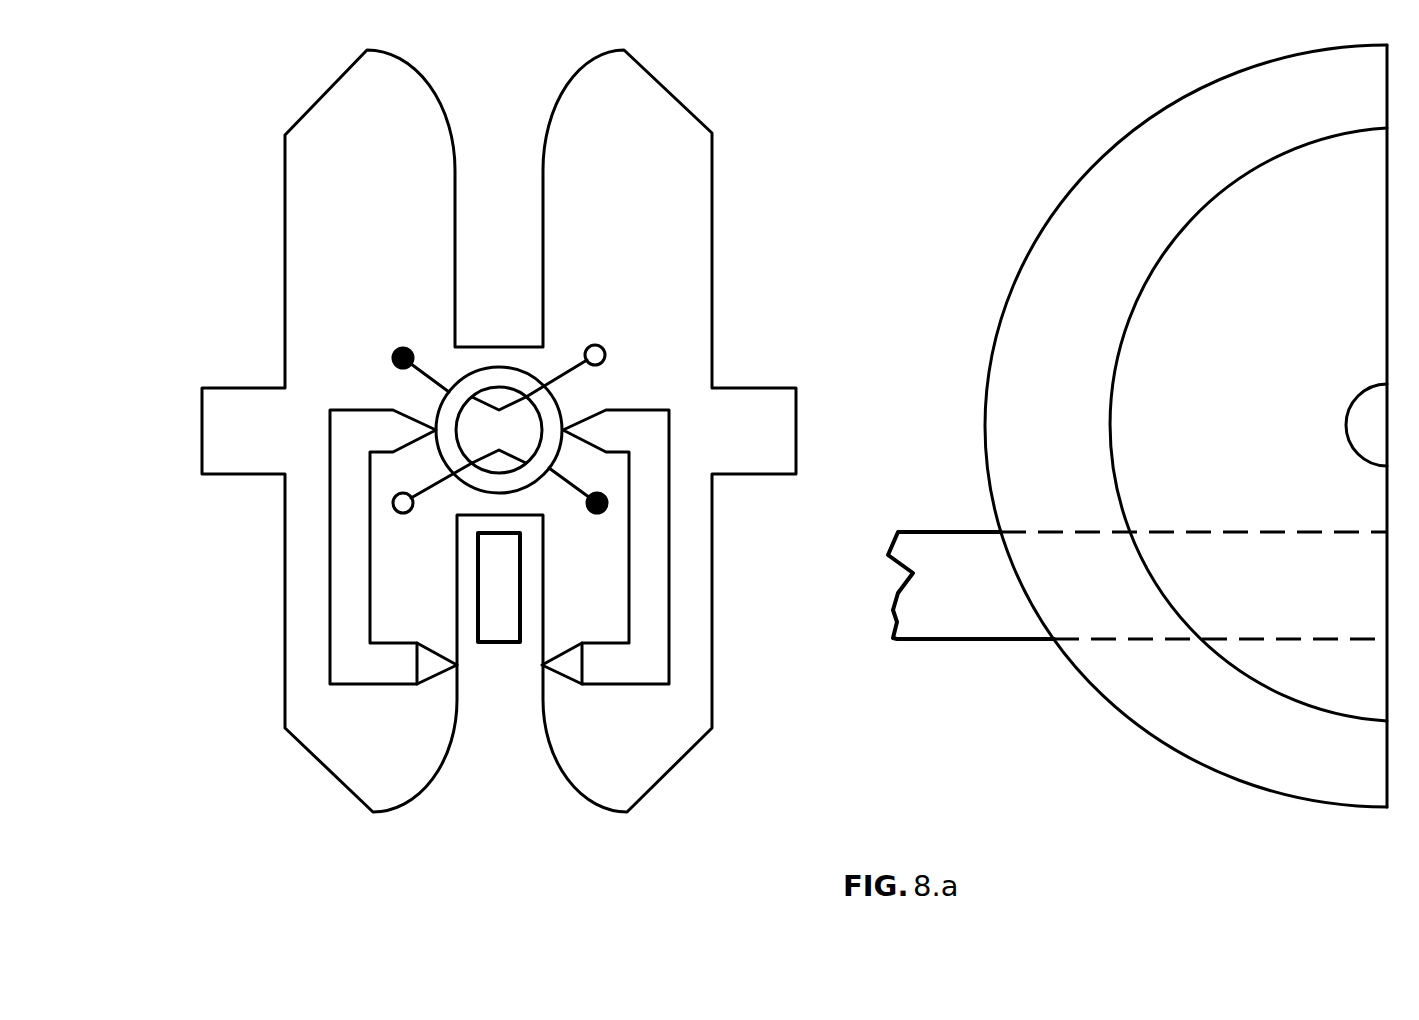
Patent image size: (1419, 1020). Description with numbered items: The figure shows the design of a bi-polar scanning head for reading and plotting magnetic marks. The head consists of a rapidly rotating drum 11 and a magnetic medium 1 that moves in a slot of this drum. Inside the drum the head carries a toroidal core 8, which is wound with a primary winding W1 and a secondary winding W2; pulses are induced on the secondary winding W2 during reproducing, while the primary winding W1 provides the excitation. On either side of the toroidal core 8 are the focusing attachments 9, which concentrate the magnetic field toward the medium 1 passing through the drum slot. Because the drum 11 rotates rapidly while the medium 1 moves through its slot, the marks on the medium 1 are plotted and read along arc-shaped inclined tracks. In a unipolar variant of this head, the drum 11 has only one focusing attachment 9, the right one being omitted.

The medium 1 is at (500, 620).
The toroidal core 8 is at (439, 450).
The focusing attachments 9 is at (650, 557).
The rotating drum 11 is at (375, 748).
The primary winding W1 is at (488, 352).
The secondary winding W2 is at (501, 506).